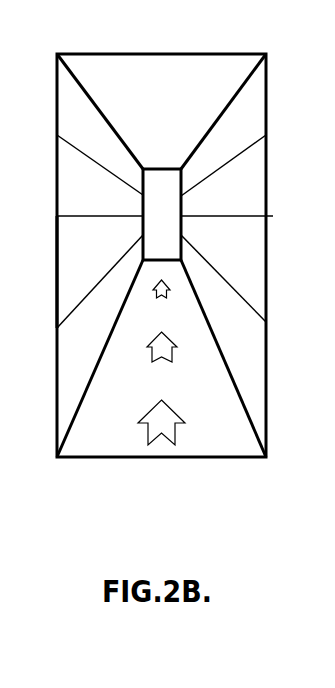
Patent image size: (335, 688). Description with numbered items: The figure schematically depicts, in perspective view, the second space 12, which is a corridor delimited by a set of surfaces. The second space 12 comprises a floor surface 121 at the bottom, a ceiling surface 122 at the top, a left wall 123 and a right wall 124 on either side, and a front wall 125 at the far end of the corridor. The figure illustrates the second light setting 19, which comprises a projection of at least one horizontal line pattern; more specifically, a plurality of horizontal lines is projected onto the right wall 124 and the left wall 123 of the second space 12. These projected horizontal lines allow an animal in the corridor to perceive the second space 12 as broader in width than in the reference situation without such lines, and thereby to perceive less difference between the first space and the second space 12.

The second space 12 is at (268, 72).
The second light setting 19 is at (97, 159).
The floor surface 121 is at (206, 436).
The ceiling surface 122 is at (157, 67).
The left wall 123 is at (78, 237).
The right wall 124 is at (245, 199).
The front wall 125 is at (166, 187).